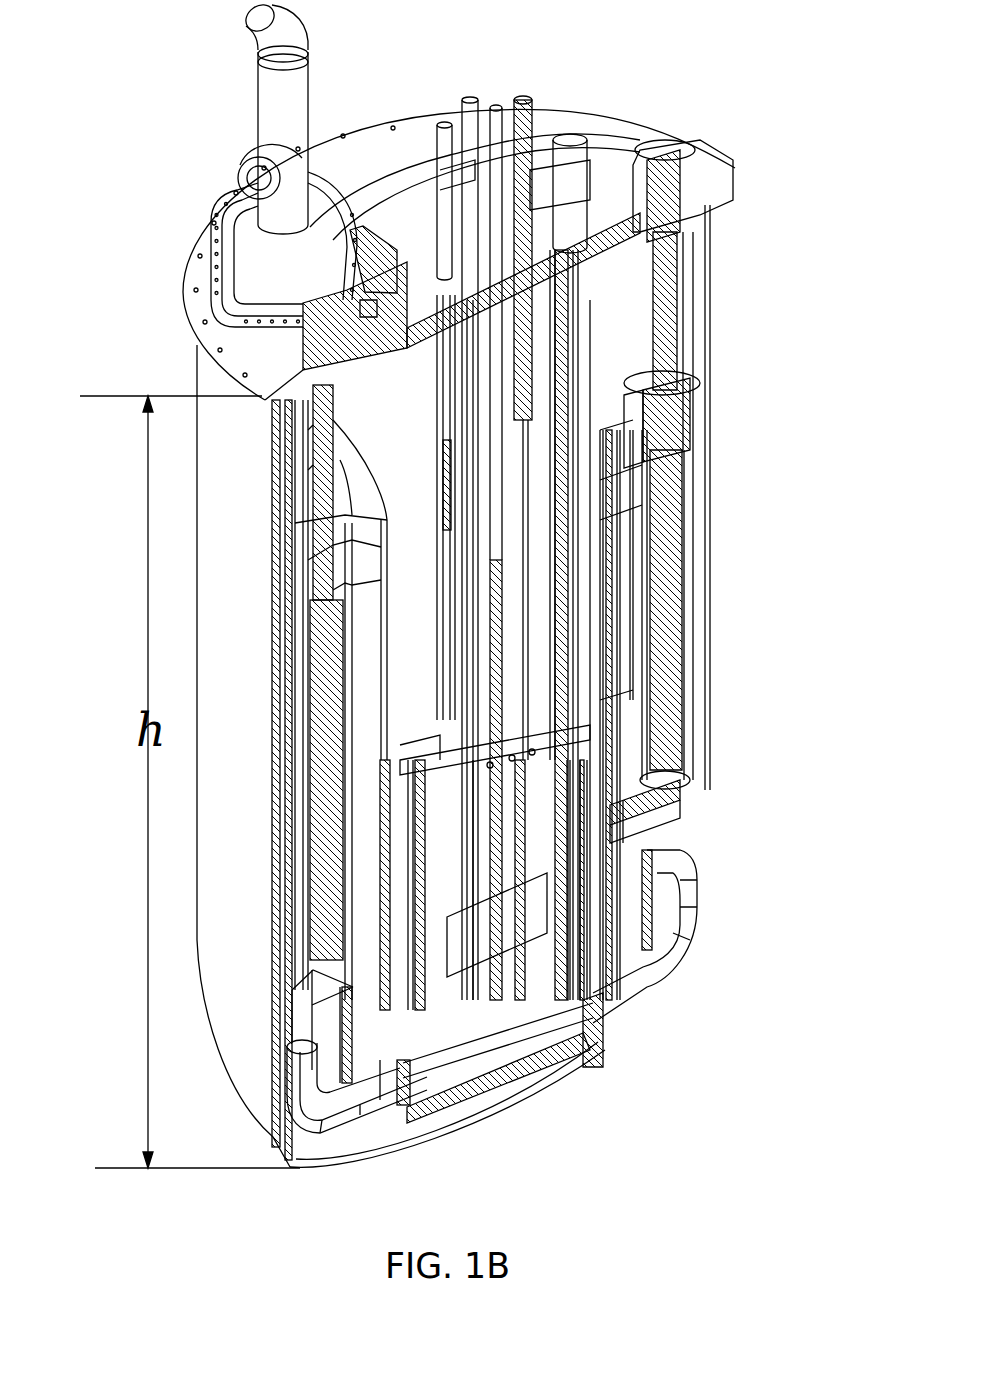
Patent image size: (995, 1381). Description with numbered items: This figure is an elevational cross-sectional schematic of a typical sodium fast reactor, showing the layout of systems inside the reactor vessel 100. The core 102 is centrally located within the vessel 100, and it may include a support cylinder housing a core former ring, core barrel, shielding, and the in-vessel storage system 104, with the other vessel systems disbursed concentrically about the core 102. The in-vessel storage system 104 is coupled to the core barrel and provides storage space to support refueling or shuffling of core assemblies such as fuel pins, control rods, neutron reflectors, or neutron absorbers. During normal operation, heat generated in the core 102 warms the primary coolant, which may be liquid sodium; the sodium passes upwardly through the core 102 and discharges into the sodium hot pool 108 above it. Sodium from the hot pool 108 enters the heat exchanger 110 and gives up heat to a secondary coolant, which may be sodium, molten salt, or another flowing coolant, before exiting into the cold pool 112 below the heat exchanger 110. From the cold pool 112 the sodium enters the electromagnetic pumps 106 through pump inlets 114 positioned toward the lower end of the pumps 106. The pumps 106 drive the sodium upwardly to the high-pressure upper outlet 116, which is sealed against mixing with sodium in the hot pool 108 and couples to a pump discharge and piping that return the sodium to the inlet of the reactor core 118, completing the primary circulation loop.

The reactor vessel 100 is at (163, 70).
The core 102 is at (527, 908).
The in-vessel storage system 104 is at (513, 667).
The electromagnetic pump 106 is at (664, 548).
The sodium hot pool 108 is at (437, 633).
The heat exchanger 110 is at (343, 190).
The cold pool 112 is at (300, 1023).
The pump inlet 114 is at (672, 775).
The high-pressure upper outlet 116 is at (692, 410).
The inlet of the reactor core 118 is at (522, 1045).